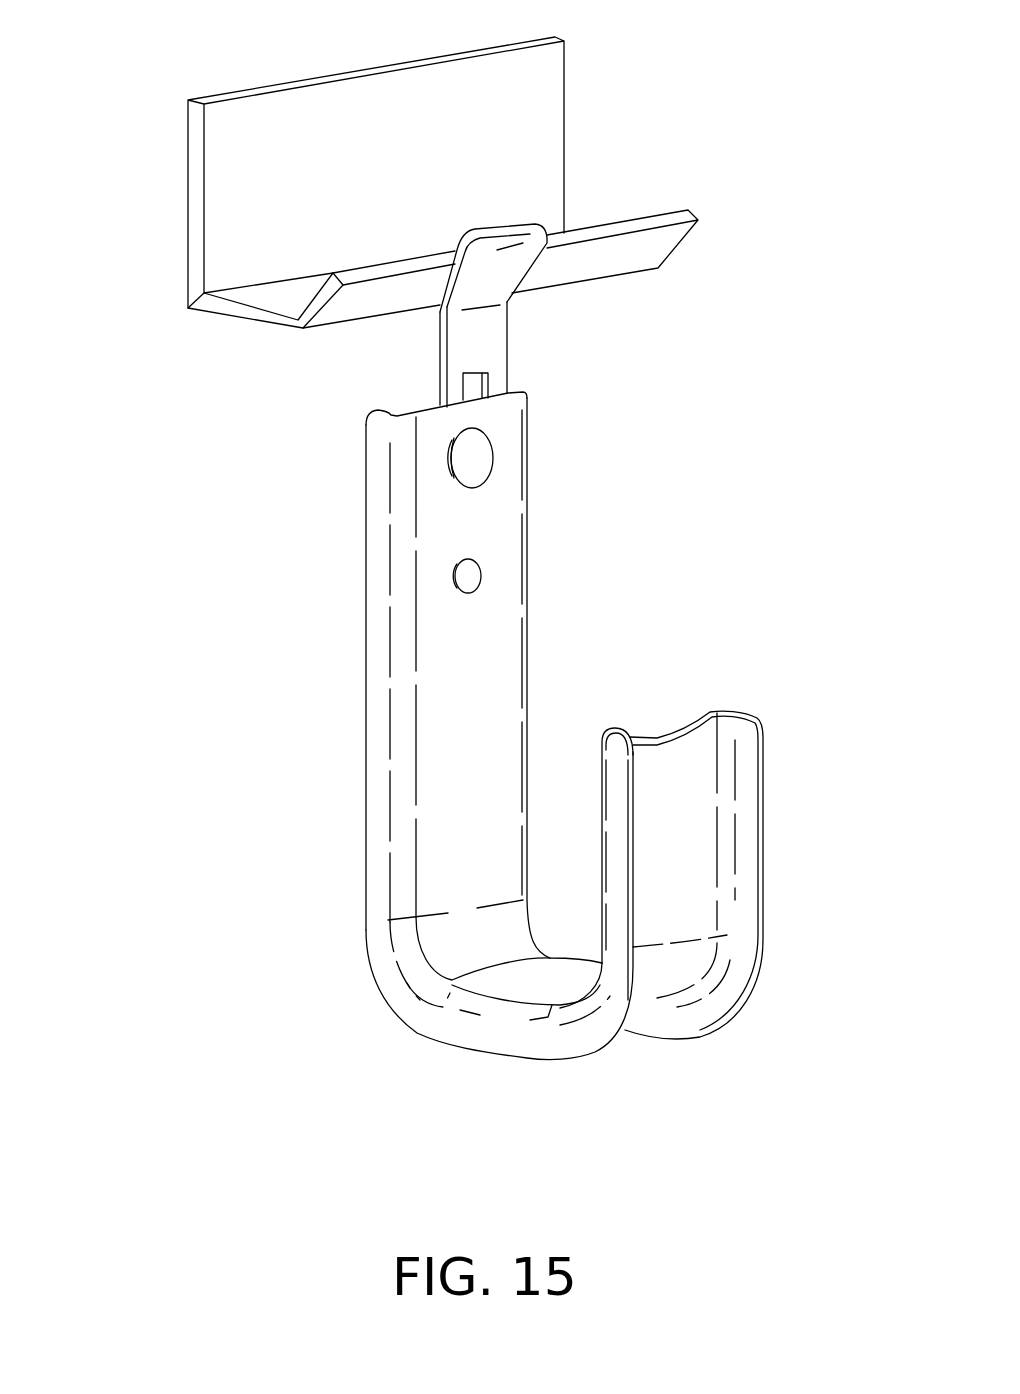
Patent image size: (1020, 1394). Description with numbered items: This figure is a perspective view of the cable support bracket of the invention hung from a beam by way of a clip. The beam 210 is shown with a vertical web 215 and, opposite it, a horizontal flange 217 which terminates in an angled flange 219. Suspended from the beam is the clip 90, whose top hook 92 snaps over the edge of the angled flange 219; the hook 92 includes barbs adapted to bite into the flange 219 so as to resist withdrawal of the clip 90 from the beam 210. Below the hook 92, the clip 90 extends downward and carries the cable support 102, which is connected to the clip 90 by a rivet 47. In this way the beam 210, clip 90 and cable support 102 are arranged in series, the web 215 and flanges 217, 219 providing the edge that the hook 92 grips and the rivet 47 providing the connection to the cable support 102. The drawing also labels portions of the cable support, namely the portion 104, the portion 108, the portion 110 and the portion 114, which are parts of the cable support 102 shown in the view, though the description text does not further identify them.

The beam 210 is at (452, 232).
The vertical web 215 is at (233, 195).
The horizontal flange 217 is at (243, 312).
The angled flange 219 is at (700, 212).
The top hook 92 is at (510, 240).
The clip 90 is at (547, 350).
The cable support 102 is at (519, 775).
The back plate of hook 104 is at (437, 710).
The rivet 47 is at (482, 460).
The curved hook arm 108 is at (785, 819).
The inner bottom surface 110 is at (513, 975).
The bottom portion of hook 114 is at (557, 1040).